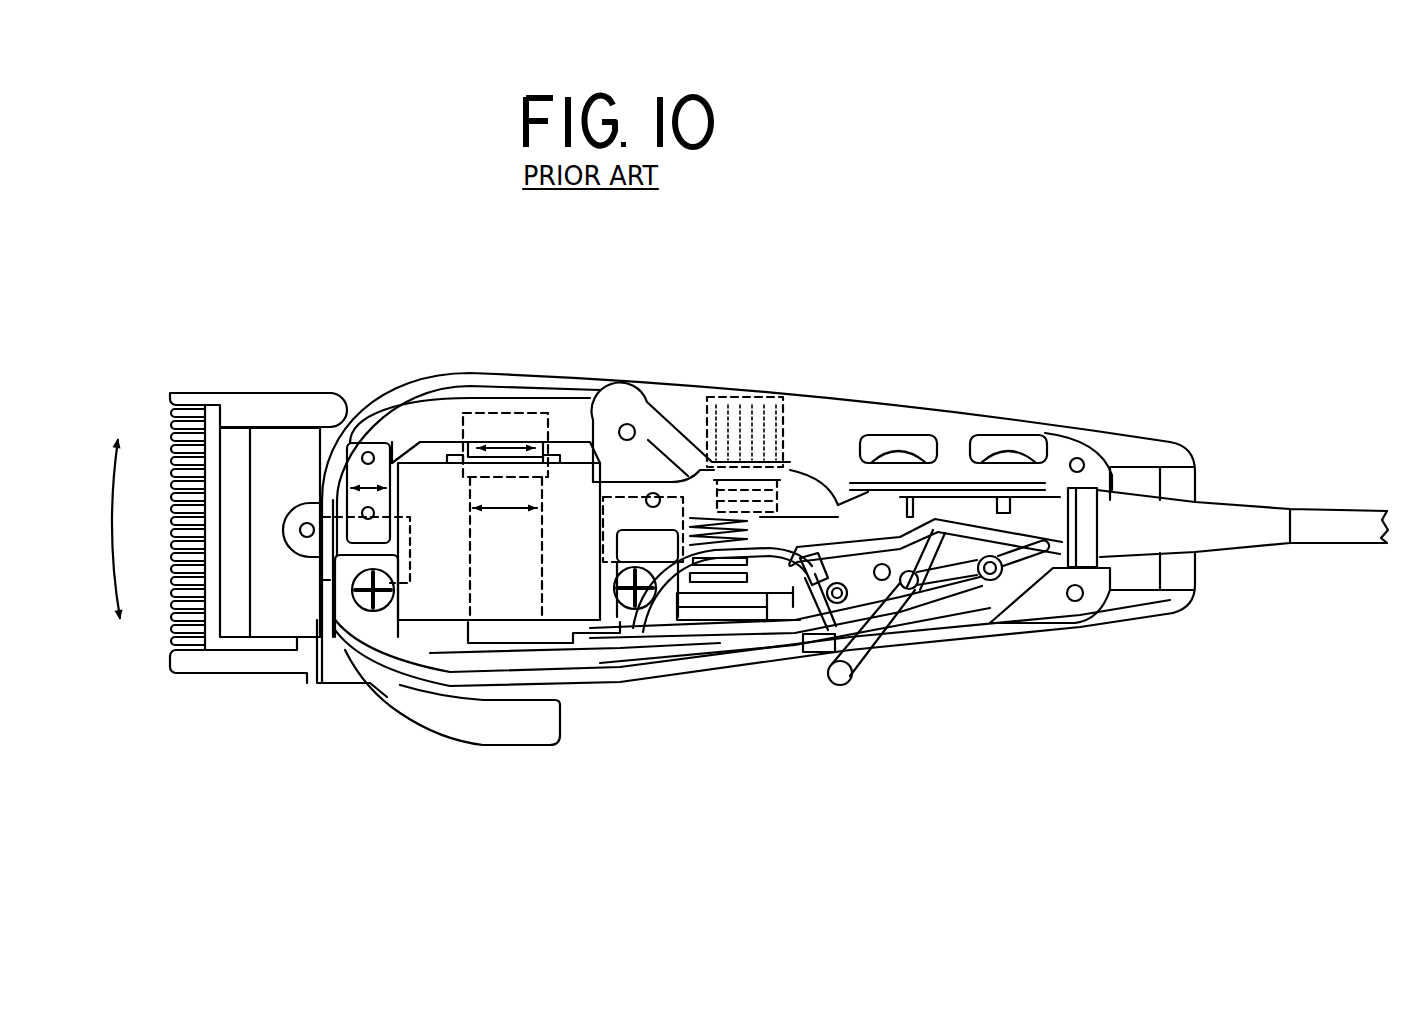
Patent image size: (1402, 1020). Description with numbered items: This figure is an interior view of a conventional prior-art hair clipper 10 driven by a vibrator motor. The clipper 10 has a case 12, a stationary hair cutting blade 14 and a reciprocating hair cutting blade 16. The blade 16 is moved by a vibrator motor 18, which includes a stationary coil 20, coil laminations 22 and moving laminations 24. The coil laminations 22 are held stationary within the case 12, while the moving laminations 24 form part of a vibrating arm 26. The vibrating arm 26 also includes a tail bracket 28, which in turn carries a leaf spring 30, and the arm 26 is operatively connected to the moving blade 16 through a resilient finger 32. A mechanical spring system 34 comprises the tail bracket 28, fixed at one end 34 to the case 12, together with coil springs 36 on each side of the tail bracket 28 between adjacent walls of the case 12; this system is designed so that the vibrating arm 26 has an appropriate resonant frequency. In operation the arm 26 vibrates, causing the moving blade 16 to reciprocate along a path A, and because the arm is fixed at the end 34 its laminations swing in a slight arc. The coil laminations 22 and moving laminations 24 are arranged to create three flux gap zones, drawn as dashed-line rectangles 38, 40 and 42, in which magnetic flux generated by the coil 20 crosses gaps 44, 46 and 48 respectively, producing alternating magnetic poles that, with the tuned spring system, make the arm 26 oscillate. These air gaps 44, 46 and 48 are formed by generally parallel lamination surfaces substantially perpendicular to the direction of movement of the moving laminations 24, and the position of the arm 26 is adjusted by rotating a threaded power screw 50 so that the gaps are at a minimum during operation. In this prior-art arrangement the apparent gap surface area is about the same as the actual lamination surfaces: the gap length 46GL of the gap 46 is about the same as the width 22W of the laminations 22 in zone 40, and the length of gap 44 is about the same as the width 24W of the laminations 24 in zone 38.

The hair clipper 10 is at (366, 352).
The case 12 is at (684, 670).
The stationary hair cutting blade 14 is at (192, 398).
The reciprocating hair cutting blade 16 is at (227, 420).
The vibrator motor 18 is at (544, 393).
The stationary coil 20 is at (571, 600).
The coil laminations 22 is at (342, 590).
The width of the laminations 22 22W is at (512, 512).
The moving laminations 24 is at (430, 425).
The width of the laminations 24 24W is at (376, 480).
The vibrating arm 26 is at (628, 392).
The tail bracket 28 is at (655, 447).
The leaf spring 30 is at (853, 483).
The resilient finger 32 is at (340, 497).
The mechanical spring system 34 is at (952, 480).
The coil springs 36 is at (773, 493).
The flux gap zone 38 is at (315, 677).
The flux gap zone 40 is at (478, 403).
The flux gap zone 42 is at (607, 483).
The air gap 44 is at (372, 635).
The air gap 46 is at (483, 473).
The gap length of the gap 46 46GL is at (512, 445).
The air gap 48 is at (645, 528).
The threaded power screw 50 is at (748, 415).
The path A is at (112, 532).